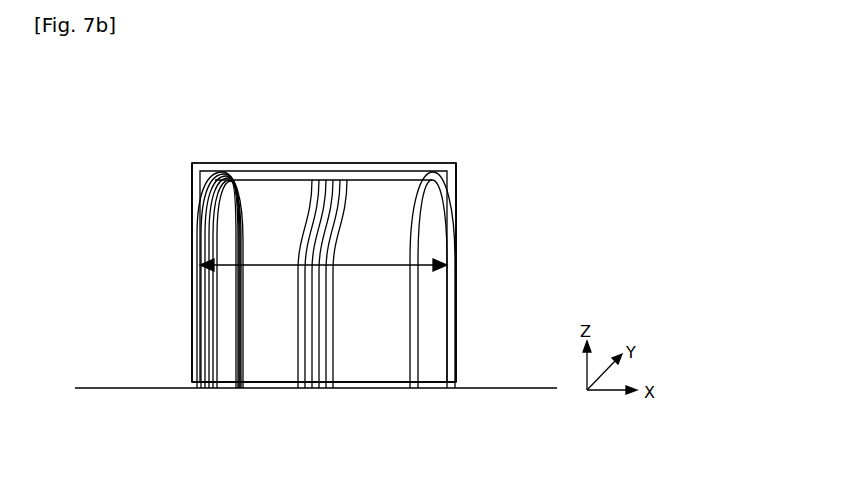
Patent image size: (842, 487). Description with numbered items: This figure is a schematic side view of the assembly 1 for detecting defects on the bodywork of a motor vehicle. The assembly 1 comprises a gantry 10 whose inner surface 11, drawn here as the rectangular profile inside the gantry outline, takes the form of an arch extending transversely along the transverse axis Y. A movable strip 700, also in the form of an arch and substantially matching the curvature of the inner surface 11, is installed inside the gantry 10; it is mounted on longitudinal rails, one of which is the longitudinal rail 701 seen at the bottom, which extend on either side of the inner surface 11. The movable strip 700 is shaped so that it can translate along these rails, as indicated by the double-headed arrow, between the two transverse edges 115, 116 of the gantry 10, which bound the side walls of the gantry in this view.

The assembly 1 is at (150, 244).
The gantry 10 is at (382, 163).
The inner surface 11 is at (444, 195).
The movable strip 700 is at (453, 215).
The longitudinal rail 701 is at (342, 378).
The transverse edge 115 is at (458, 342).
The transverse edge 116 is at (190, 343).